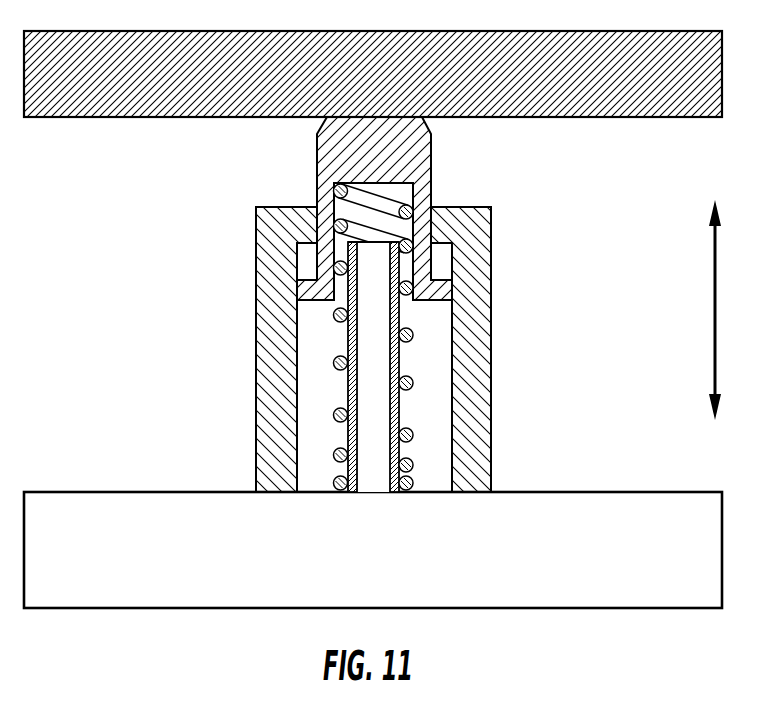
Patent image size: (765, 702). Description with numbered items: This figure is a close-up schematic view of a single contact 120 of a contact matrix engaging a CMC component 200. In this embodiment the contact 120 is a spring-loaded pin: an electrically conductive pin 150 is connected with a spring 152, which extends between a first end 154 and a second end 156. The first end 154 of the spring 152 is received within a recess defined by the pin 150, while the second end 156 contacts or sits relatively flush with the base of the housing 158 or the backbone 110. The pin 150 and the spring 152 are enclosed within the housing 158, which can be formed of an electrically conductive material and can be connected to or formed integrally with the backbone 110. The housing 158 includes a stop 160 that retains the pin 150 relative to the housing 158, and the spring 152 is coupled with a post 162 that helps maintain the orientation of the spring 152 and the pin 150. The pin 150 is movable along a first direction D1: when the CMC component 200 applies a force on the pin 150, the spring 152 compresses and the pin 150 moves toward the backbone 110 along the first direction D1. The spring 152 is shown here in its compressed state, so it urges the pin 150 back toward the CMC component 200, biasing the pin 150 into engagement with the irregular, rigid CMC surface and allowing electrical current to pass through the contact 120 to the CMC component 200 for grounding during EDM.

The CMC component 200 is at (429, 87).
The backbone 110 is at (428, 556).
The contact 120 is at (524, 246).
The electrically conductive pin 150 is at (316, 163).
The spring 152 is at (349, 338).
The first end 154 is at (324, 191).
The second end 156 is at (320, 482).
The housing 158 is at (256, 321).
The stop 160 is at (447, 210).
The post 162 is at (399, 355).
The first direction D1 is at (716, 317).